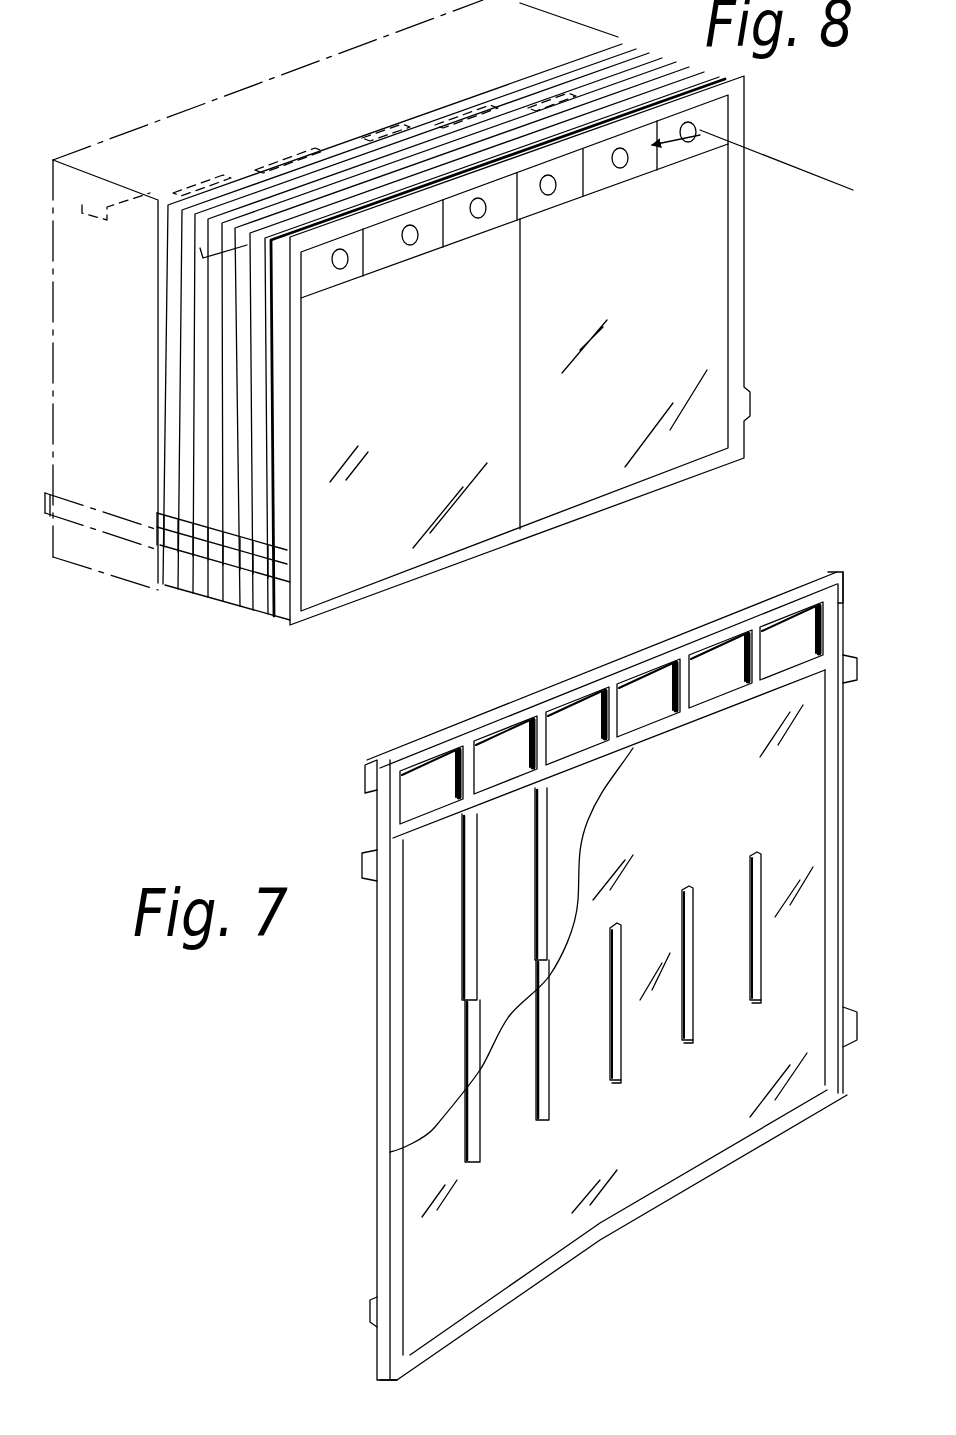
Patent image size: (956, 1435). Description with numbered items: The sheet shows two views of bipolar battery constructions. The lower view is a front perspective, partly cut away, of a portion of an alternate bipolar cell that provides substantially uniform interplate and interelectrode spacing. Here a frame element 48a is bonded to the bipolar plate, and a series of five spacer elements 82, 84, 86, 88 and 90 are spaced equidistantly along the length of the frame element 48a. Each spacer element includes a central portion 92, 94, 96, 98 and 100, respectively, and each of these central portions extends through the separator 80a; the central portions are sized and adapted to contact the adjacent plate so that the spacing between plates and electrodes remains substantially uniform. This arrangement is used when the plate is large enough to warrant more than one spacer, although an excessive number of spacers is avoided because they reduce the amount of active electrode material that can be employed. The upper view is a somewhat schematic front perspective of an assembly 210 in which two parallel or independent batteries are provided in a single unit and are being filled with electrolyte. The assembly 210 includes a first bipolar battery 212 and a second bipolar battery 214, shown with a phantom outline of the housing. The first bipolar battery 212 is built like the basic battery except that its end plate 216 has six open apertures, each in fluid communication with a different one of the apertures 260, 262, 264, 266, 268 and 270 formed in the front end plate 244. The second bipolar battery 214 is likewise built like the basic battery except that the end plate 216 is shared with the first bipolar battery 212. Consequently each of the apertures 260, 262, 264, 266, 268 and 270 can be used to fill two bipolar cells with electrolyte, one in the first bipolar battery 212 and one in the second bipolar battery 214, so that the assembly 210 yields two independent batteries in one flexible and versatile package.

In FIG. 8, the assembly 210 is at (112, 118).
In FIG. 8, the first bipolar battery 212 is at (294, 630).
In FIG. 8, the second bipolar battery 214 is at (152, 585).
In FIG. 8, the end plate 216 is at (172, 348).
In FIG. 8, the end plate 244 is at (380, 590).
In FIG. 8, the aperture 260 is at (341, 269).
In FIG. 8, the aperture 262 is at (410, 245).
In FIG. 8, the aperture 264 is at (478, 218).
In FIG. 8, the aperture 266 is at (548, 195).
In FIG. 8, the aperture 268 is at (620, 168).
In FIG. 8, the aperture 270 is at (688, 142).
In FIG. 7, the separator 80a is at (655, 1180).
In FIG. 7, the frame element 48a is at (380, 1125).
In FIG. 7, the spacer element 82 is at (463, 905).
In FIG. 7, the spacer element 84 is at (537, 876).
In FIG. 7, the spacer element 86 is at (632, 750).
In FIG. 7, the spacer element 88 is at (686, 885).
In FIG. 7, the spacer element 90 is at (757, 853).
In FIG. 7, the central portion 92 is at (480, 1160).
In FIG. 7, the central portion 94 is at (550, 1118).
In FIG. 7, the central portion 96 is at (621, 1080).
In FIG. 7, the central portion 98 is at (692, 1040).
In FIG. 7, the central portion 100 is at (761, 998).